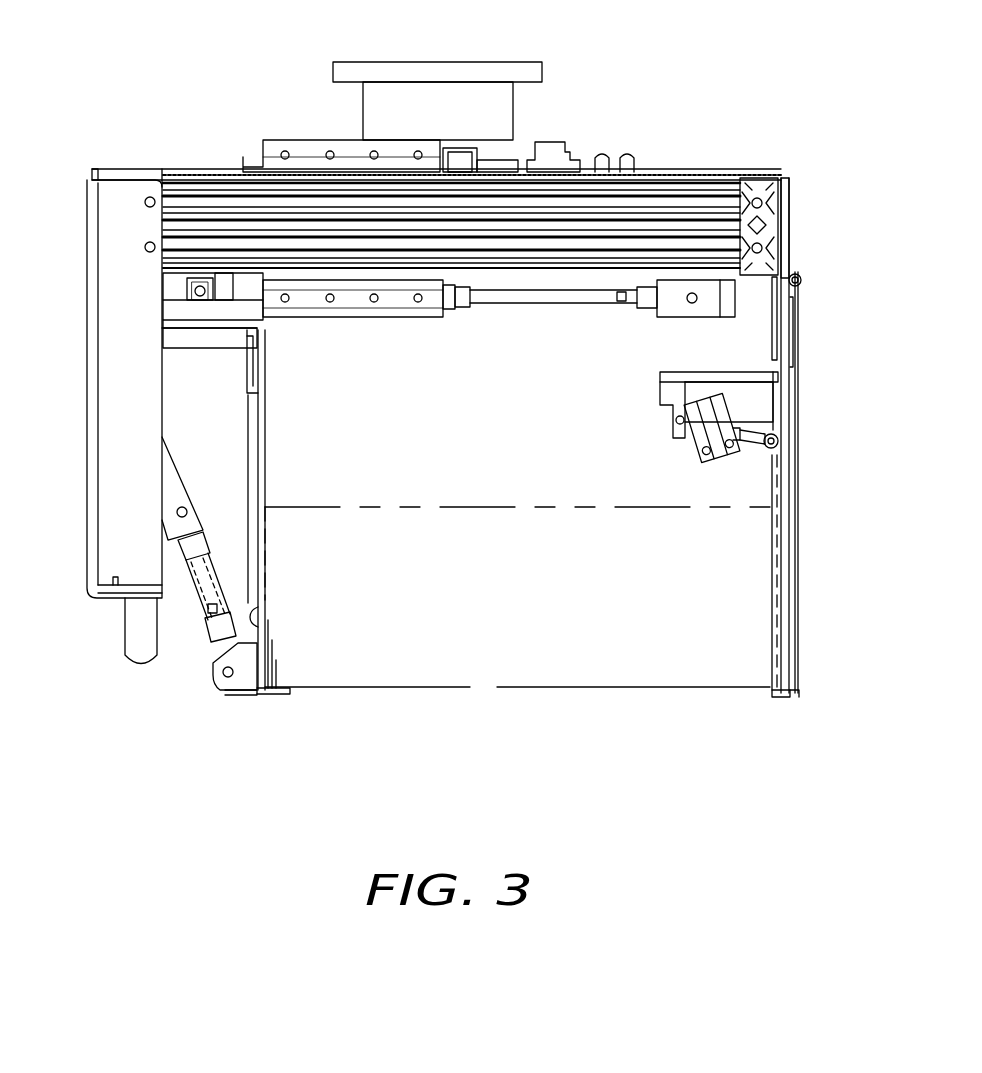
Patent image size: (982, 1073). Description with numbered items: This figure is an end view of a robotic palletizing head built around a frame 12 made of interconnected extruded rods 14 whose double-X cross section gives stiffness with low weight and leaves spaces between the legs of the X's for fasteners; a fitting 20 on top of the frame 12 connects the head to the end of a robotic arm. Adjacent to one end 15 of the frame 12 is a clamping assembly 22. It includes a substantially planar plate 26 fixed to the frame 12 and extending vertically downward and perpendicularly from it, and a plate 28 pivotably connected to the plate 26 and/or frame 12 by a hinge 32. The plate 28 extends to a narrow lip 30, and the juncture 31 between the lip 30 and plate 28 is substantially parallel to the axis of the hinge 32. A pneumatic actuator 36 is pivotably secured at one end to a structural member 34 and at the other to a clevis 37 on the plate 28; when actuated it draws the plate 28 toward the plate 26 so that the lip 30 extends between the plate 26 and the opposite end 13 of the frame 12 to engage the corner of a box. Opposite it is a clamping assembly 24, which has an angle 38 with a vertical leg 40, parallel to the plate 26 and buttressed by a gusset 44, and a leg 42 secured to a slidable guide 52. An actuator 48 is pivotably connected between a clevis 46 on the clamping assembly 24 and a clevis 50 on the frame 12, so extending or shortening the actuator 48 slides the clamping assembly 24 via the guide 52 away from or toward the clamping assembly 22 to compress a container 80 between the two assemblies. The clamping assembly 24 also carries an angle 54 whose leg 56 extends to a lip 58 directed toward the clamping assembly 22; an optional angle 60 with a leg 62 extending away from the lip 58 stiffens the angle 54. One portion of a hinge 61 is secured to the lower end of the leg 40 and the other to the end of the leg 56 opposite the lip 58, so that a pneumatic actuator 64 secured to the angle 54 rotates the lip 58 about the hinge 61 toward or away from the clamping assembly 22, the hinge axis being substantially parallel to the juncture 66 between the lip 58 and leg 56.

The frame 12 is at (660, 177).
The end of frame 13 is at (92, 176).
The rods 14 is at (773, 205).
The end of frame 15 is at (789, 186).
The fitting 20 is at (521, 62).
The clamping assembly 22 is at (773, 740).
The clamping assembly 24 is at (232, 724).
The plate 26 is at (772, 657).
The plate 28 is at (795, 552).
The lip 30 is at (780, 700).
The juncture 31 is at (799, 693).
The hinge 32 is at (799, 275).
The structural member 34 is at (657, 392).
The actuator 36 is at (750, 455).
The clevis 37 is at (773, 450).
The angle 38 is at (270, 505).
The leg 40 is at (266, 552).
The leg 42 is at (389, 330).
The gusset 44 is at (230, 437).
The clevis 46 is at (185, 290).
The actuator 48 is at (505, 310).
The clevis 50 is at (690, 318).
The guide 52 is at (300, 138).
The angle 54 is at (265, 645).
The leg 56 is at (268, 662).
The lip 58 is at (285, 695).
The angle 60 is at (248, 700).
The hinge 61 is at (262, 612).
The leg 62 is at (235, 700).
The actuator 64 is at (215, 655).
The juncture 66 is at (268, 682).
The container 80 is at (513, 688).